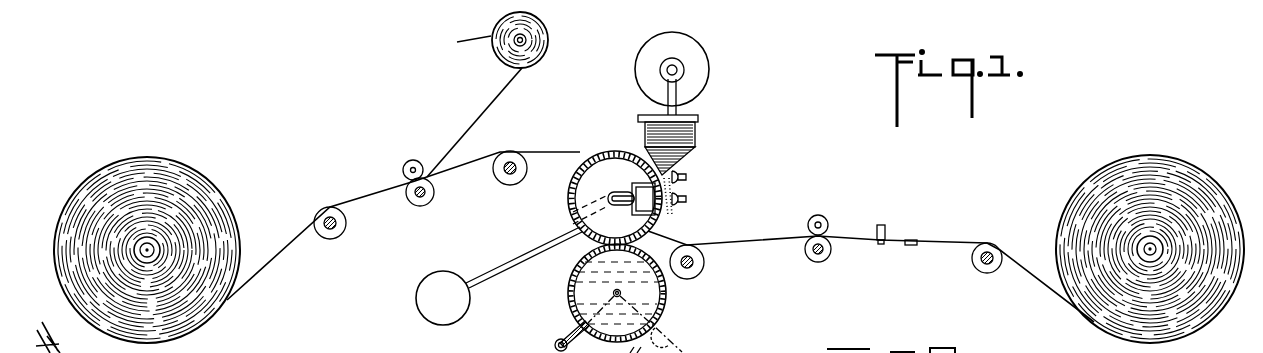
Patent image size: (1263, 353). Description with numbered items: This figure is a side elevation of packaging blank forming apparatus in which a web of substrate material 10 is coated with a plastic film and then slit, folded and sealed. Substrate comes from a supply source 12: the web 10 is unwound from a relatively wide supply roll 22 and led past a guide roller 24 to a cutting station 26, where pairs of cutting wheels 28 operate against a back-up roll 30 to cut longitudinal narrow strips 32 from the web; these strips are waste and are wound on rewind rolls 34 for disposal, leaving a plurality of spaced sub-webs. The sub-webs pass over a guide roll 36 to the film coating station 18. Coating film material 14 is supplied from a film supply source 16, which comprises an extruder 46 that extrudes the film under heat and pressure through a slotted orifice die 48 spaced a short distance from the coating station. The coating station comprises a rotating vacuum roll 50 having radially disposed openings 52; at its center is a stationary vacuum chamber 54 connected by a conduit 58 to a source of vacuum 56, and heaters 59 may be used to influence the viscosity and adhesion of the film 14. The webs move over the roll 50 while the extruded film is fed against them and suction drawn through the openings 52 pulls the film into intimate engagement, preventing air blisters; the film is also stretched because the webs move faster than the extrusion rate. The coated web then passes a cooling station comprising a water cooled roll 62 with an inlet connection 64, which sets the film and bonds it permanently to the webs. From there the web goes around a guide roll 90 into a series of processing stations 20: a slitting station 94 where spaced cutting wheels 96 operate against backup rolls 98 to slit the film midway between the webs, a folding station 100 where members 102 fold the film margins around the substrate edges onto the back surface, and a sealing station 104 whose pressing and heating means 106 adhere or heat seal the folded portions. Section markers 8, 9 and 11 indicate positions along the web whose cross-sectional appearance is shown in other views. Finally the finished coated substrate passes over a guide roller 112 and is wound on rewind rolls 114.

The web position marker 8 is at (747, 214).
The web position marker 9 is at (818, 189).
The web of substrate material 10 is at (282, 246).
The web position marker 11 is at (913, 207).
The supply source 12 is at (373, 168).
The coating film material 14 is at (647, 178).
The film supply source 16 is at (712, 126).
The film coating station 18 is at (668, 220).
The processing stations 20 is at (922, 203).
The supply roll 22 is at (183, 175).
The guide roller 24 is at (328, 240).
The cutting station 26 is at (414, 212).
The cutting wheels 28 is at (418, 160).
The back-up roll 30 is at (438, 186).
The narrow strips 32 is at (495, 108).
The rewind rolls 34 is at (546, 30).
The guide roll 36 is at (510, 186).
The extruder 46 is at (645, 130).
The slotted orifice die 48 is at (696, 147).
The vacuum roll 50 is at (583, 238).
The radially disposed openings 52 is at (605, 152).
The stationary vacuum chamber 54 is at (678, 251).
The source of vacuum 56 is at (416, 298).
The conduit 58 is at (490, 268).
The heaters 59 is at (688, 197).
The water cooled roll 62 is at (570, 300).
The inlet connection 64 is at (565, 326).
The guide roll 90 is at (688, 280).
The slitting station 94 is at (858, 210).
The cutting wheels 96 is at (810, 223).
The backup rolls 98 is at (806, 256).
The folding station 100 is at (887, 220).
The folding members 102 is at (878, 244).
The sealing station 104 is at (918, 232).
The pressing and heating means 106 is at (908, 246).
The guide roller 112 is at (992, 246).
The rewind rolls 114 is at (1105, 178).